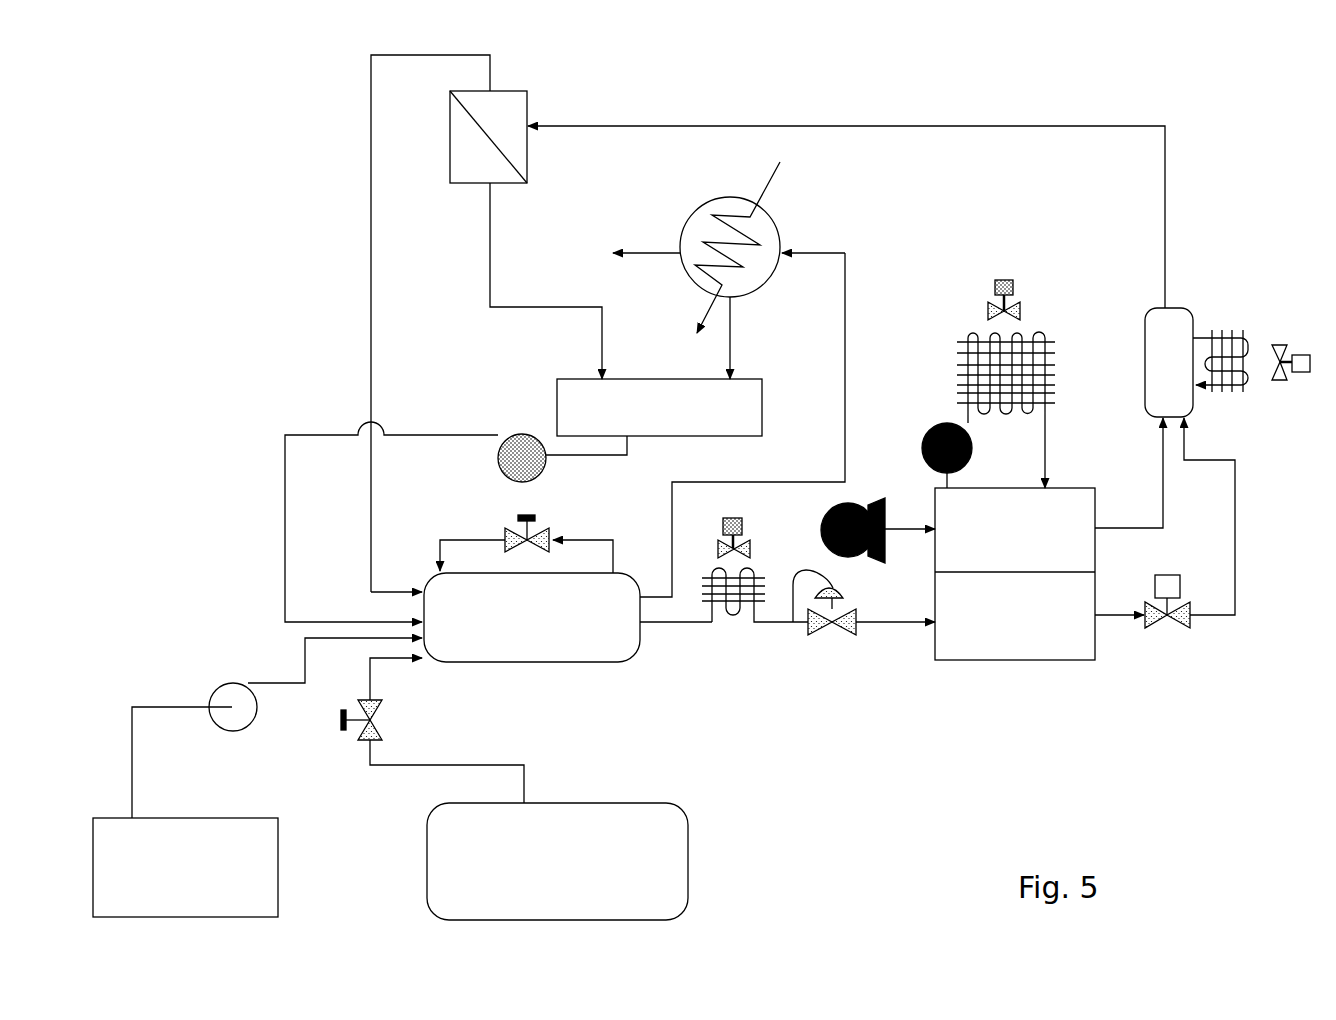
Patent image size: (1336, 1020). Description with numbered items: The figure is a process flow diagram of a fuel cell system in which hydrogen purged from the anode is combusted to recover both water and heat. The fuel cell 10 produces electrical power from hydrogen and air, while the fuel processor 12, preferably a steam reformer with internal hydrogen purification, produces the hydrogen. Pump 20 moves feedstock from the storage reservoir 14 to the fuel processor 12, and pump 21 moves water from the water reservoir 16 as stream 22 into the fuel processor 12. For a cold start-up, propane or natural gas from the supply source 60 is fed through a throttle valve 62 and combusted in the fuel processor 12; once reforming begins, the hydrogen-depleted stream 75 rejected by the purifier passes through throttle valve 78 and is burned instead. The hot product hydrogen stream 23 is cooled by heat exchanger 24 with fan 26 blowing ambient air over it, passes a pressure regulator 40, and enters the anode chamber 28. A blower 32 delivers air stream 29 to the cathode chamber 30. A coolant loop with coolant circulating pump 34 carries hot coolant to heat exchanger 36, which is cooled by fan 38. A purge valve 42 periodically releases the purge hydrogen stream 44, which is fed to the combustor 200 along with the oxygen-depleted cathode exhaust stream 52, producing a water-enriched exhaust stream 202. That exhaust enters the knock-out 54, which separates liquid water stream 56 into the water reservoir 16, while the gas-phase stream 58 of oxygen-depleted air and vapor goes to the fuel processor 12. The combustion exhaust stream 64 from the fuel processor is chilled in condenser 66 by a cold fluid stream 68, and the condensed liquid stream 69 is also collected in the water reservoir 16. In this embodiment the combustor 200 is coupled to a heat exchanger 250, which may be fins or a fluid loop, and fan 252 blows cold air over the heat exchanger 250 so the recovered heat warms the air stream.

The fuel cell 10 is at (982, 570).
The fuel processor 12 is at (553, 664).
The storage reservoir 14 is at (280, 850).
The water reservoir 16 is at (763, 408).
The pump 20 is at (213, 690).
The pump 21 is at (500, 470).
The stream 22 is at (283, 553).
The product hydrogen stream 23 is at (665, 623).
The heat exchanger 24 is at (735, 612).
The fan 26 is at (742, 527).
The anode chamber 28 is at (1058, 645).
The air stream 29 is at (903, 531).
The cathode chamber 30 is at (1053, 498).
The blower 32 is at (868, 502).
The coolant circulating pump 34 is at (930, 430).
The heat exchanger 36 is at (1047, 337).
The fan 38 is at (1013, 289).
The pressure regulator 40 is at (808, 628).
The purge valve 42 is at (1182, 583).
The purge hydrogen stream 44 is at (1237, 555).
The cathode exhaust stream 52 is at (1163, 500).
The knock-out 54 is at (527, 97).
The liquid water stream 56 is at (490, 238).
The gas-phase stream 58 is at (367, 202).
The supply source 60 is at (688, 843).
The throttle valve 62 is at (382, 735).
The combustion exhaust stream 64 is at (671, 518).
The condenser 66 is at (776, 220).
The cold fluid stream 68 is at (767, 175).
The liquid stream 69 is at (733, 338).
The hydrogen-depleted stream 75 is at (602, 540).
The throttle valve 78 is at (537, 518).
The combustor 200 is at (1193, 317).
The exhaust stream 202 is at (1168, 212).
The heat exchanger 250 is at (1247, 338).
The fan 252 is at (1305, 355).